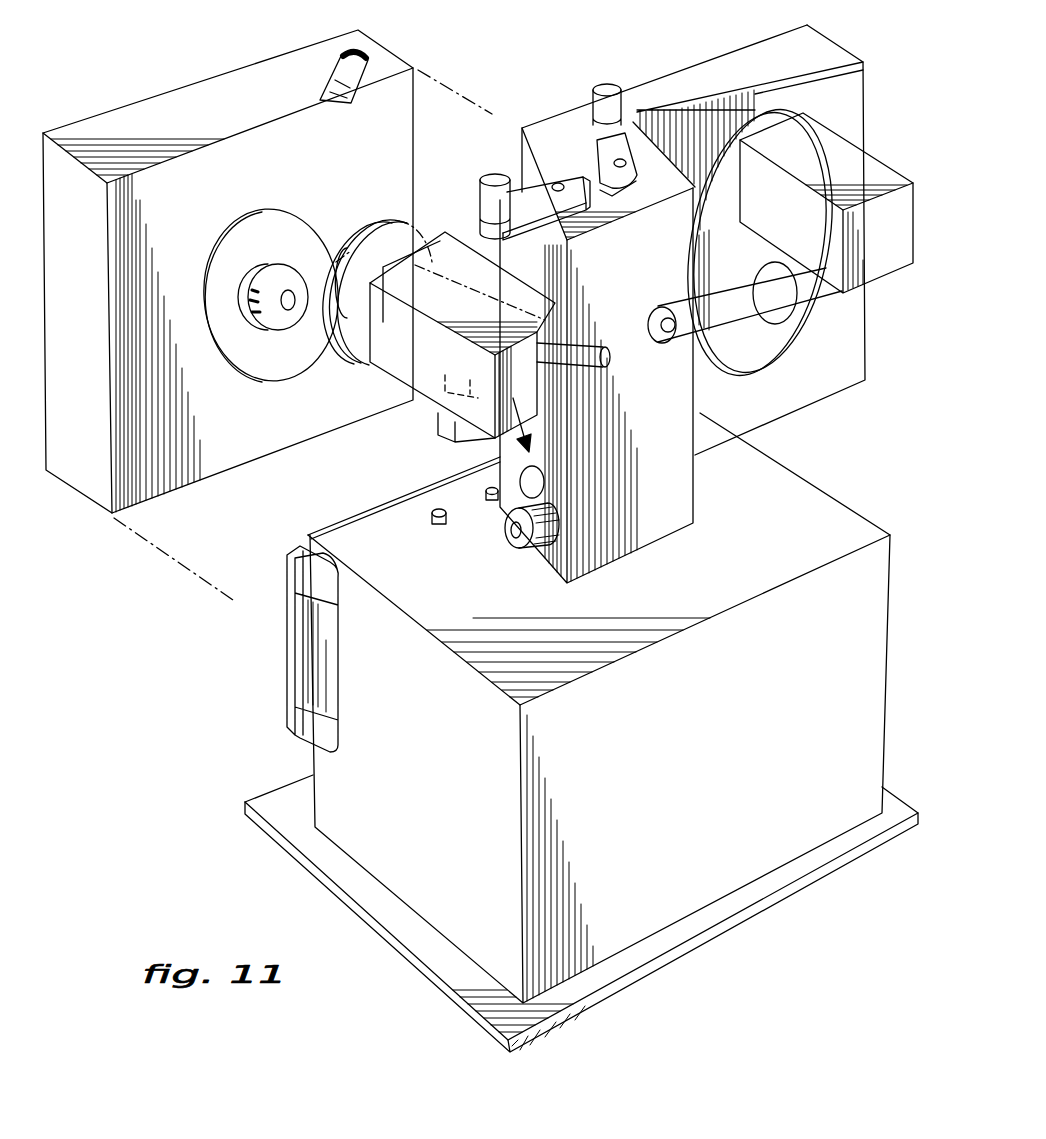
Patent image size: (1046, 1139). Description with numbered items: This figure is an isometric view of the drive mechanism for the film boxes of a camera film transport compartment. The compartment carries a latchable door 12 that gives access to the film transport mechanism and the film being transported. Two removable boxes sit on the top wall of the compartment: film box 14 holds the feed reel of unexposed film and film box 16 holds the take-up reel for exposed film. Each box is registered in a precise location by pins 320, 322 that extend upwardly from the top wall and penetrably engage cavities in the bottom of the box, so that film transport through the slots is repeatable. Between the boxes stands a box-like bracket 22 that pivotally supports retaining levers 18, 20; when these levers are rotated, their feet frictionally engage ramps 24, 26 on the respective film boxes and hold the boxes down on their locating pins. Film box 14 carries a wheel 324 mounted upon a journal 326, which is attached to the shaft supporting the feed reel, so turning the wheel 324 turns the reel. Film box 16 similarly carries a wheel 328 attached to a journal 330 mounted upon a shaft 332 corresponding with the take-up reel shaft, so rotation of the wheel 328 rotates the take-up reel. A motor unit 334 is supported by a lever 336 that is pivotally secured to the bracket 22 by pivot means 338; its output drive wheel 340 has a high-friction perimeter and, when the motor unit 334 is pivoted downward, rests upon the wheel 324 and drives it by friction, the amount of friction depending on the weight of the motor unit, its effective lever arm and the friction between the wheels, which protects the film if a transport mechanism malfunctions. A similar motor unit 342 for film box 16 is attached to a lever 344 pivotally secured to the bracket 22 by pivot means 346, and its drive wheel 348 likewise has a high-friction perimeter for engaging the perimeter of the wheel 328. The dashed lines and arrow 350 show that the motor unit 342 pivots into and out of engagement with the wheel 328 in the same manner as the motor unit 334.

The latchable door 12 is at (287, 655).
The film box 14 is at (727, 80).
The film box 16 is at (173, 98).
The retaining lever 18 is at (570, 132).
The retaining lever 20 is at (527, 188).
The bracket 22 is at (667, 467).
The ramp 24 is at (632, 118).
The ramp 26 is at (343, 63).
The pin 320 is at (440, 524).
The pin 322 is at (497, 502).
The wheel 324 is at (780, 340).
The journal 326 is at (787, 310).
The wheel 328 is at (292, 362).
The journal 330 is at (268, 318).
The shaft 332 is at (293, 295).
The motor unit 334 is at (853, 167).
The lever 336 is at (720, 310).
The pivot means 338 is at (680, 272).
The drive wheel 340 is at (768, 122).
The motor unit 342 is at (437, 400).
The lever 344 is at (580, 345).
The pivot means 346 is at (606, 358).
The drive wheel 348 is at (355, 345).
The arrow 350 is at (528, 446).